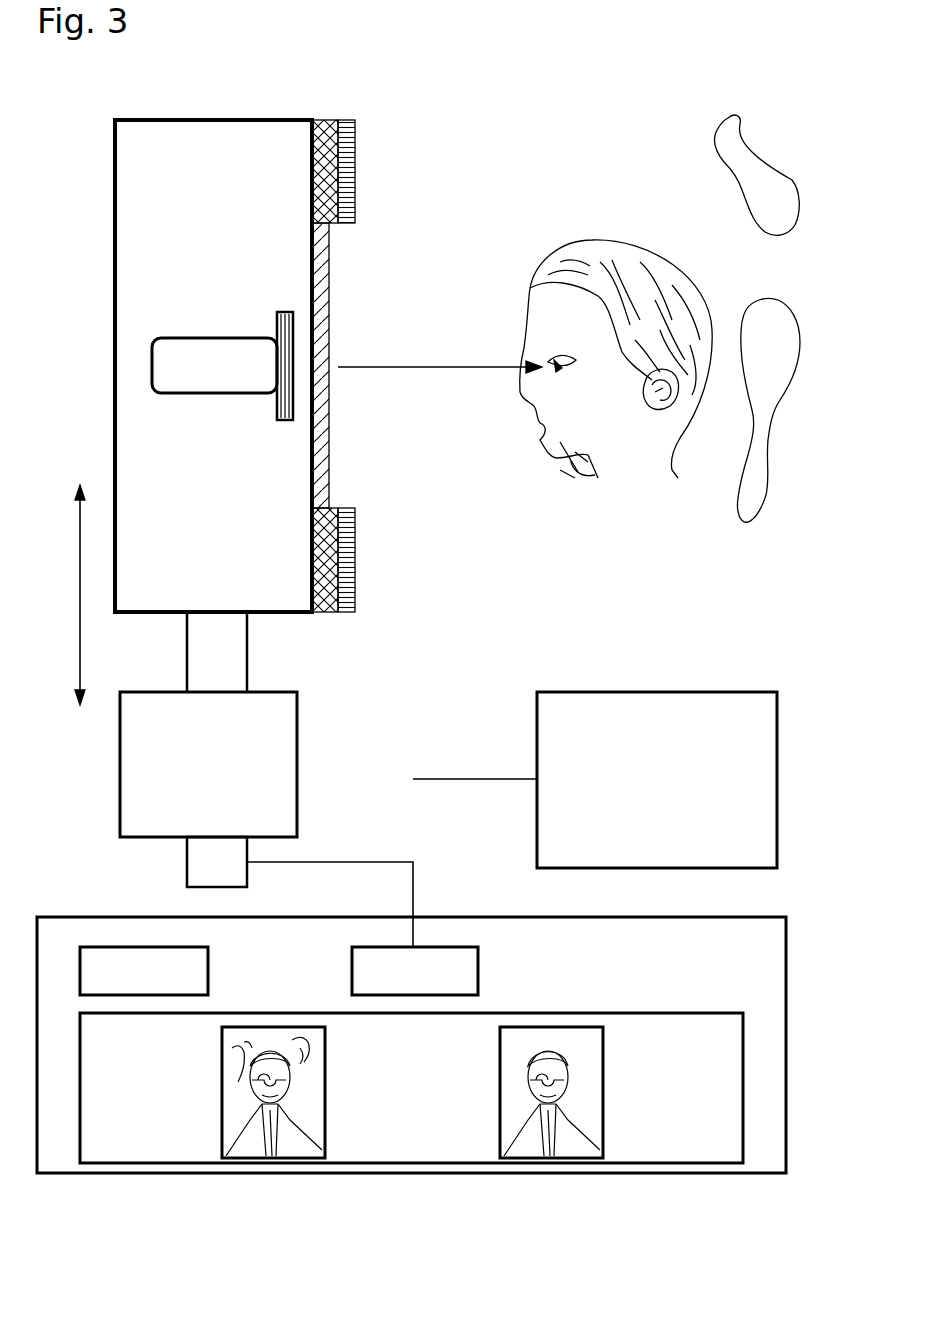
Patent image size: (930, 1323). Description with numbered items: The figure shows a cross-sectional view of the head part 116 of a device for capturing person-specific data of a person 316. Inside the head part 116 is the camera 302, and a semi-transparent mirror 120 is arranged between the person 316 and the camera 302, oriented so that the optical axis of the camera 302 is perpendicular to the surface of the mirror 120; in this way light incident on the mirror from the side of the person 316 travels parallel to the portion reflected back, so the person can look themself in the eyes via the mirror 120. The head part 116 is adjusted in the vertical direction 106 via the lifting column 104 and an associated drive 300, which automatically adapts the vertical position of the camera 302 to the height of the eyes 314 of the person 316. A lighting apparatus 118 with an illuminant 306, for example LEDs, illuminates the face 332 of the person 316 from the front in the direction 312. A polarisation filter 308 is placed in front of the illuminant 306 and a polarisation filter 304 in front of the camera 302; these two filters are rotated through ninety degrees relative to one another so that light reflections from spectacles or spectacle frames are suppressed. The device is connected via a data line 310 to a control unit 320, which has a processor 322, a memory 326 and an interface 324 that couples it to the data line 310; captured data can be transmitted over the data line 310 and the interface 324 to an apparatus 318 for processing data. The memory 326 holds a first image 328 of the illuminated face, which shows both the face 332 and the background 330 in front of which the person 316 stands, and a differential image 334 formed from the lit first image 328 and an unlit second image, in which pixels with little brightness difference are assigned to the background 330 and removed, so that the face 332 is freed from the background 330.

The lifting column 104 is at (208, 653).
The direction 106 is at (78, 609).
The head part 116 is at (213, 118).
The lighting apparatus 118 is at (390, 203).
The semi-transparent mirror 120 is at (330, 296).
The drive 300 is at (118, 765).
The camera 302 is at (218, 383).
The polarisation filter 304 is at (284, 421).
The illuminant 306 is at (322, 118).
The polarisation filter 308 is at (356, 160).
The data line 310 is at (413, 807).
The direction 312 is at (453, 370).
The eyes 314 is at (540, 362).
The person 316 is at (614, 215).
The apparatus for processing data 318 is at (655, 692).
The control unit 320 is at (74, 915).
The processor 322 is at (210, 968).
The interface 324 is at (480, 968).
The memory 326 is at (678, 1012).
The first image 328 is at (222, 1094).
The background 330 is at (763, 176).
The face 332 is at (575, 455).
The differential image 334 is at (604, 1096).